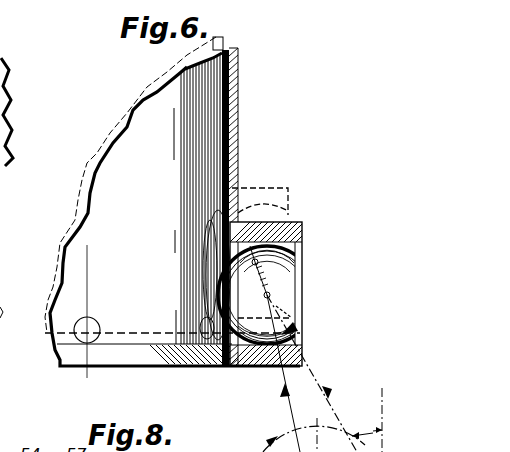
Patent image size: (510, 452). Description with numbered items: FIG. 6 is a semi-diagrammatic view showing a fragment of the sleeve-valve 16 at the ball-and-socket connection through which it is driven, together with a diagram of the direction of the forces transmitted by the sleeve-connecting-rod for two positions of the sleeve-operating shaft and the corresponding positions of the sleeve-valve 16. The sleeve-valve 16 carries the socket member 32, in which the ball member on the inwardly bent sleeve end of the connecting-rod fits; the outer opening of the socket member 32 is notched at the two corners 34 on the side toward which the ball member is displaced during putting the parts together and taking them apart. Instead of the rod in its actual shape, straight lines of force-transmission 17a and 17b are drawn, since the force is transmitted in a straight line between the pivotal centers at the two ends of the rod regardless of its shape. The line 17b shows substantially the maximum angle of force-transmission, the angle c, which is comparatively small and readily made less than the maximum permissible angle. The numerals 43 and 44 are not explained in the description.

The sleeve-valve 16 is at (238, 131).
The socket member 32 is at (267, 222).
The corners 34 is at (298, 331).
The line of force-transmission 17a is at (290, 392).
The line of force-transmission 17b is at (323, 380).
The angle c is at (367, 435).
The lever 43 is at (26, 12).
The rod 44 is at (281, 10).